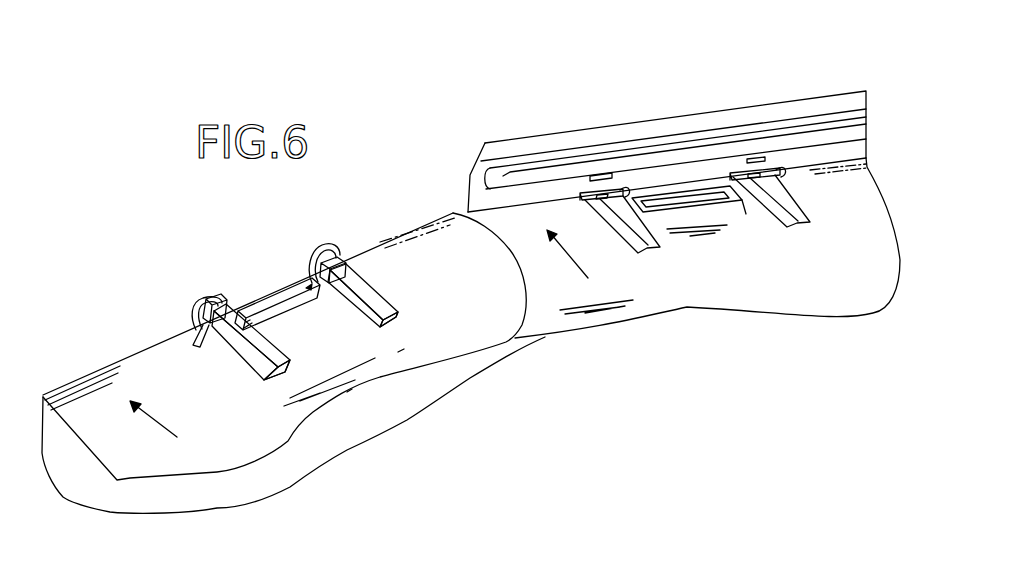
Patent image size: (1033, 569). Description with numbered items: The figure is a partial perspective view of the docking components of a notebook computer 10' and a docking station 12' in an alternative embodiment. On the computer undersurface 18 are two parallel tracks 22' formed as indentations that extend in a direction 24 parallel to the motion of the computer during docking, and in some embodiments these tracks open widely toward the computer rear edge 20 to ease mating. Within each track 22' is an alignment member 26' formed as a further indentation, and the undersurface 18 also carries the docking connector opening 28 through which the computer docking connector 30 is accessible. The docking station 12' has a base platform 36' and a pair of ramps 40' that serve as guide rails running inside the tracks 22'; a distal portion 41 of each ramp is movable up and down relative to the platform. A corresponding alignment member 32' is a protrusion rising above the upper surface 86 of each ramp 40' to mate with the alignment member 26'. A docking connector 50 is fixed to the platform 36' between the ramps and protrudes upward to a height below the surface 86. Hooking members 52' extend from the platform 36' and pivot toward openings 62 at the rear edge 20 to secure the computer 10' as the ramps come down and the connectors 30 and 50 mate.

The computer 10' is at (856, 52).
The docking station 12' is at (128, 291).
The computer undersurface 18 is at (852, 293).
The computer rear edge 20 is at (855, 147).
The tracks 22' is at (728, 232).
The direction 24 is at (154, 418).
The alignment member 26' is at (715, 213).
The docking connector opening 28 is at (740, 208).
The docking connector 30 is at (693, 203).
The alignment member 32' is at (278, 293).
The base platform 36' is at (293, 363).
The ramps 40' is at (314, 339).
The distal portion 41 is at (217, 350).
The docking connector 50 is at (295, 303).
The hooking members 52' is at (266, 258).
The openings 62 is at (610, 176).
The upper surface 86 is at (278, 372).